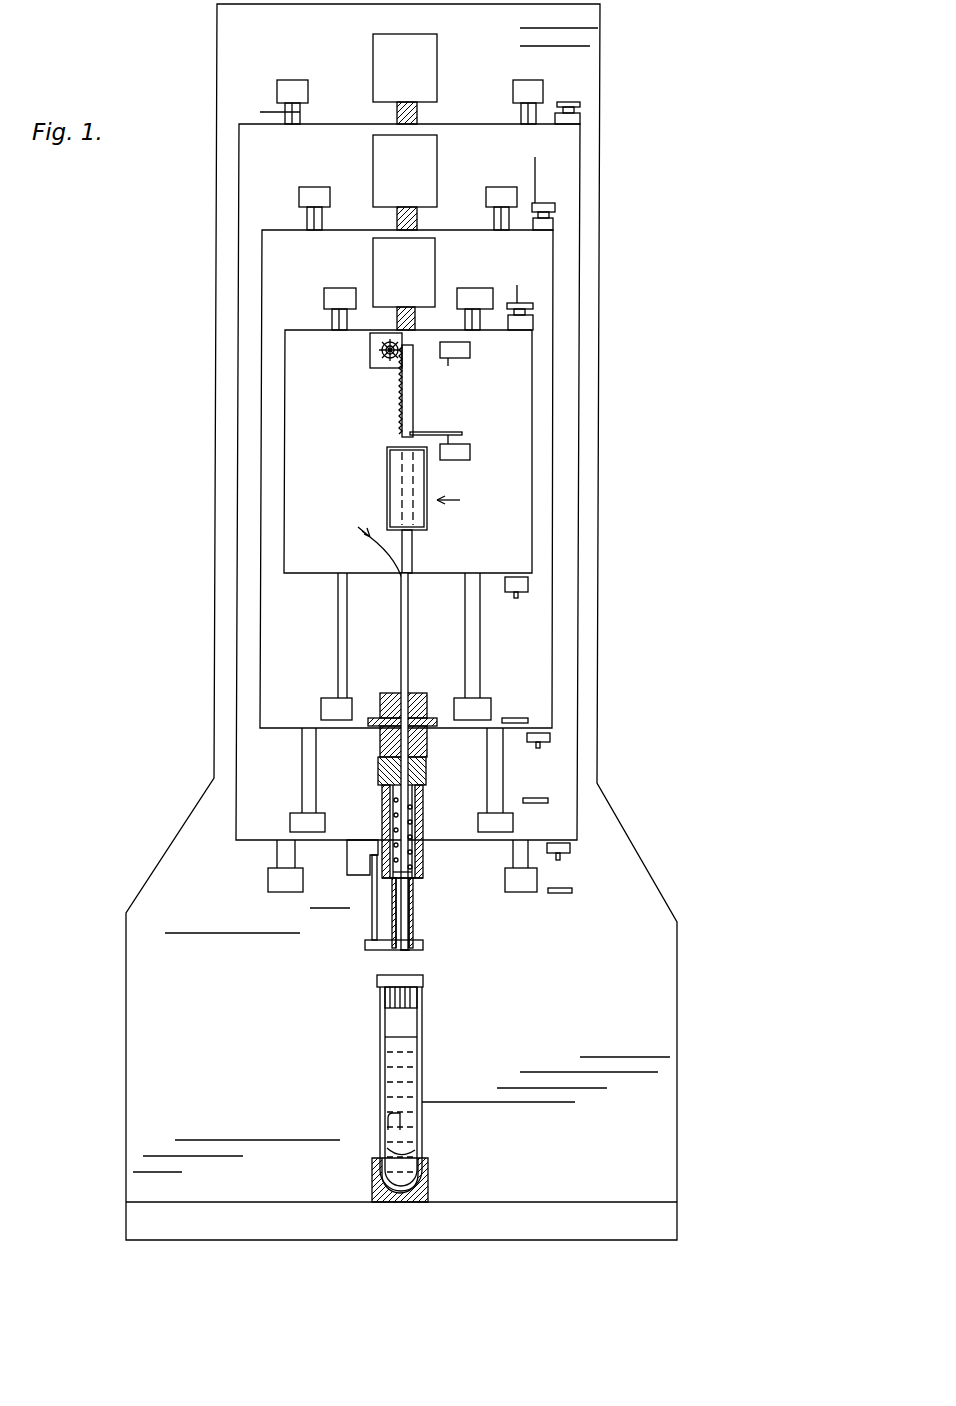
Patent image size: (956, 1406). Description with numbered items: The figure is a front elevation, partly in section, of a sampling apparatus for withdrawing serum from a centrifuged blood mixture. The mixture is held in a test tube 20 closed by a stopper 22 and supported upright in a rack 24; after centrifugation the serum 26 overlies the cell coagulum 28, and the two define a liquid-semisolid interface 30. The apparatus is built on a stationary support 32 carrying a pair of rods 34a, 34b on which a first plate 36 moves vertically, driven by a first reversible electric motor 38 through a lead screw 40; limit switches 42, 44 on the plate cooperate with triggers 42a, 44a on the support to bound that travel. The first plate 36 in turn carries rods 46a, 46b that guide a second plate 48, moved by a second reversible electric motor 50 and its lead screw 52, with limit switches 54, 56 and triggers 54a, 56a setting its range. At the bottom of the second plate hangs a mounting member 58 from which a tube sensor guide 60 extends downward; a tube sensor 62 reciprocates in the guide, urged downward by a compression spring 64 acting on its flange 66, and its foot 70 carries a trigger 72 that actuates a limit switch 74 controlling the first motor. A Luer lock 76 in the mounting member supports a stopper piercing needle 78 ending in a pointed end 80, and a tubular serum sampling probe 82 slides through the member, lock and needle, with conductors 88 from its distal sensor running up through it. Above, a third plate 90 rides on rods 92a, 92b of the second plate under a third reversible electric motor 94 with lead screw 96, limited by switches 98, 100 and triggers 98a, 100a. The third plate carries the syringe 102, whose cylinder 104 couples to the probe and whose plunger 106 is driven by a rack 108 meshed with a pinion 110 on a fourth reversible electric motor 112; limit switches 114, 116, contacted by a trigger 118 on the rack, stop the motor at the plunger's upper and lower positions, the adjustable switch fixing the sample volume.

The test tube 20 is at (422, 1050).
The stopper 22 is at (423, 980).
The rack 24 is at (428, 1178).
The serum 26 is at (402, 1075).
The cell coagulum 28 is at (405, 1145).
The liquid-semisolid interface 30 is at (386, 1113).
The stationary support 32 is at (157, 947).
The rod 34a is at (287, 110).
The rod 34b is at (527, 110).
The first plate 36 is at (565, 148).
The first reversible electric motor 38 is at (428, 48).
The lead screw 40 is at (397, 112).
The limit switch 42 is at (580, 118).
The trigger 42a is at (572, 104).
The limit switch 44 is at (570, 850).
The trigger 44a is at (560, 893).
The rod 46a is at (315, 222).
The rod 46b is at (493, 222).
The second plate 48 is at (547, 268).
The second reversible electric motor 50 is at (430, 160).
The lead screw 52 is at (397, 218).
The limit switch 54 is at (553, 226).
The trigger 54a is at (555, 208).
The limit switch 56 is at (550, 737).
The trigger 56a is at (548, 800).
The tube sensor and stopper penetrator assembly mounting member 58 is at (420, 693).
The tube sensor guide 60 is at (423, 830).
The tube sensor 62 is at (413, 918).
The compression spring 64 is at (413, 815).
The radially outwardly extending flange 66 is at (423, 880).
The foot 70 is at (365, 947).
The trigger 72 is at (372, 925).
The limit switch 74 is at (362, 840).
The Luer lock 76 is at (378, 765).
The stopper piercing needle 78 is at (392, 895).
The pointed end 80 is at (410, 950).
The serum sampling probe 82 is at (408, 635).
The conductors 88 is at (360, 540).
The third plate 90 is at (525, 420).
The rod 92a is at (335, 320).
The rod 92b is at (488, 320).
The third reversible electric motor 94 is at (418, 248).
The lead screw 96 is at (415, 322).
The limit switch 98 is at (533, 322).
The trigger 98a is at (533, 306).
The limit switch 100 is at (528, 585).
The trigger 100a is at (517, 718).
The serum sample collecting chamber or syringe 102 is at (474, 501).
The cylinder 104 is at (387, 478).
The plunger 106 is at (427, 528).
The rack 108 is at (402, 405).
The pinion 110 is at (385, 357).
The fourth reversible electric motor 112 is at (370, 345).
The limit switch 114 is at (470, 350).
The limit switch 116 is at (462, 460).
The trigger 118 is at (452, 432).